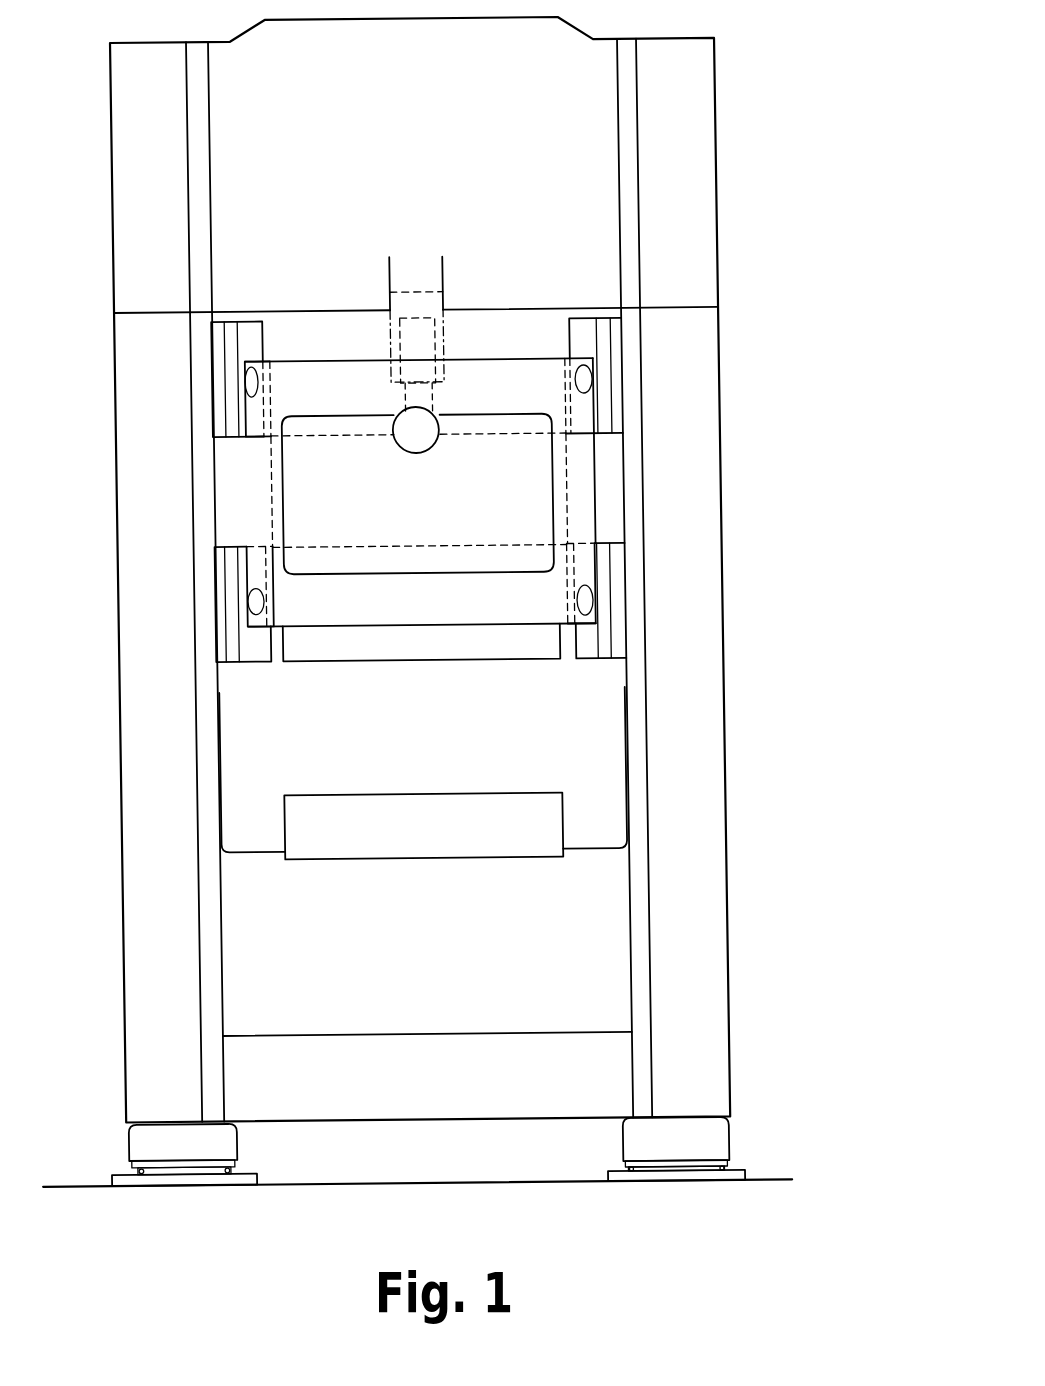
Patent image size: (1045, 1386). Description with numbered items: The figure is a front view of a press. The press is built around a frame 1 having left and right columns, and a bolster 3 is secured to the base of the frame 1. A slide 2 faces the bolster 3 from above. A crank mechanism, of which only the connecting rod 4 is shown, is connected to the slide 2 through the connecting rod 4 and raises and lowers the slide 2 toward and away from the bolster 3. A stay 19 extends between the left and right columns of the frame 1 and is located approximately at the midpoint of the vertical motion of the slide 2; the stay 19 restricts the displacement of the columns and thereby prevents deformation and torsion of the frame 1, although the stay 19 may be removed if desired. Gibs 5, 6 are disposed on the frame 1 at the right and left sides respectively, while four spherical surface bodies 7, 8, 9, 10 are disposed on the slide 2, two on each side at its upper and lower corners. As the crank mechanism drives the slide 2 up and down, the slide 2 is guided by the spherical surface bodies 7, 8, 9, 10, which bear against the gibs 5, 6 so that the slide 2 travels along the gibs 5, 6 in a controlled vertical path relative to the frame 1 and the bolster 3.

The frame 1 is at (696, 419).
The slide 2 is at (534, 644).
The bolster 3 is at (513, 841).
The connecting rod 4 is at (423, 305).
The gib 5 is at (578, 338).
The gib 6 is at (246, 336).
The spherical surface body 7 is at (590, 377).
The spherical surface body 8 is at (587, 598).
The spherical surface body 9 is at (237, 386).
The spherical surface body 10 is at (237, 584).
The stay 19 is at (603, 515).